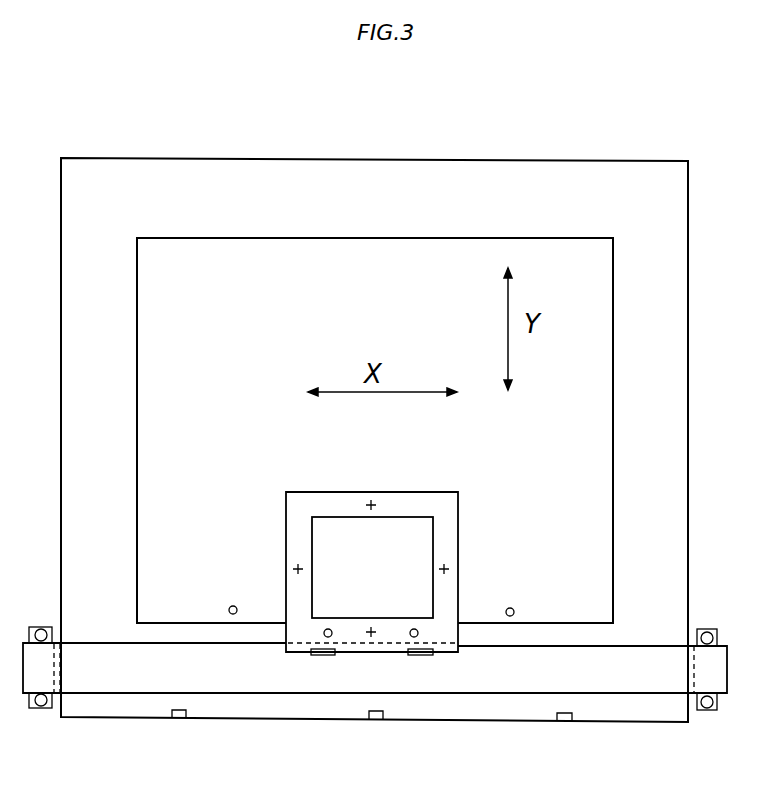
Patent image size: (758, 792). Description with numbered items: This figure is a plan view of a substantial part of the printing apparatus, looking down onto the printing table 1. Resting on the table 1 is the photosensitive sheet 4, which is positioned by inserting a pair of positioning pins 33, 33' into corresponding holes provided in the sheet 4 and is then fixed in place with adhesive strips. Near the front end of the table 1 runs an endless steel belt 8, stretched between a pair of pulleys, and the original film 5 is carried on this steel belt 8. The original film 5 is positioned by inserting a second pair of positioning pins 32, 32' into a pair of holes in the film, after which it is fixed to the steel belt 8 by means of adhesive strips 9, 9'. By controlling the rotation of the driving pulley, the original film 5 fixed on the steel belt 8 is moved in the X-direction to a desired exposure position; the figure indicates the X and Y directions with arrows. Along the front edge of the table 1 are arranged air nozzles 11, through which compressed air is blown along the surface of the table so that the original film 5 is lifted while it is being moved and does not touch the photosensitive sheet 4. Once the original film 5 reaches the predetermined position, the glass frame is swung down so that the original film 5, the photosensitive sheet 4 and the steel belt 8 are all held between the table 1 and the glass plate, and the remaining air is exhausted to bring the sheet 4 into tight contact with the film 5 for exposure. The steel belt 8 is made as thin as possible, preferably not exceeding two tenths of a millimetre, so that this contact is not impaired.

The printing table 1 is at (670, 371).
The photosensitive sheet 4 is at (600, 371).
The original film 5 is at (447, 521).
The endless steel belt 8 is at (650, 667).
The adhesive strip 9 is at (309, 670).
The adhesive strip 9' is at (410, 670).
The air nozzles 11 is at (179, 720).
The positioning pin 32 is at (338, 599).
The positioning pin 32' is at (412, 599).
The positioning pin 33 is at (236, 585).
The positioning pin 33' is at (525, 586).